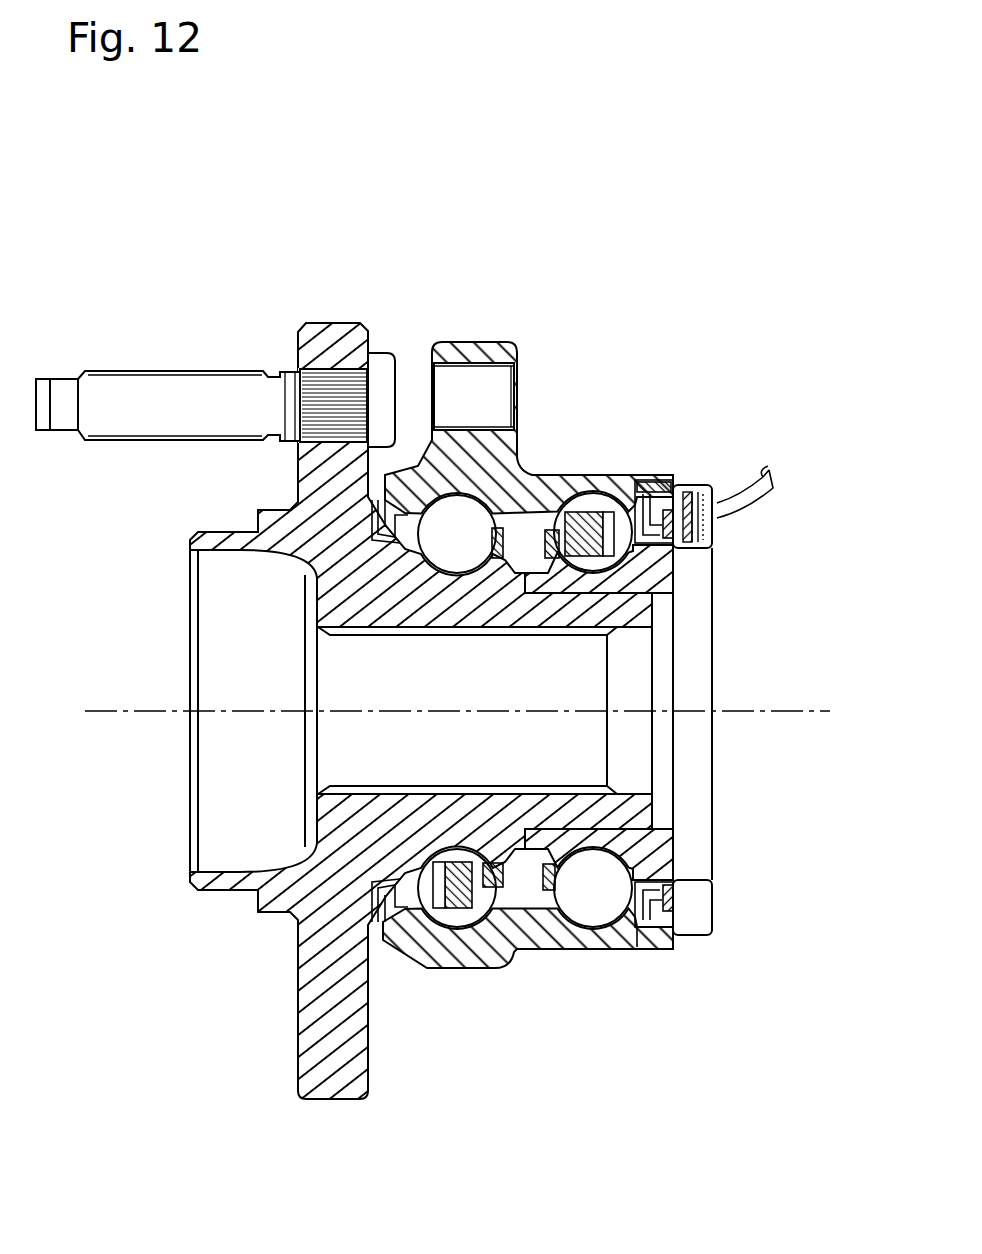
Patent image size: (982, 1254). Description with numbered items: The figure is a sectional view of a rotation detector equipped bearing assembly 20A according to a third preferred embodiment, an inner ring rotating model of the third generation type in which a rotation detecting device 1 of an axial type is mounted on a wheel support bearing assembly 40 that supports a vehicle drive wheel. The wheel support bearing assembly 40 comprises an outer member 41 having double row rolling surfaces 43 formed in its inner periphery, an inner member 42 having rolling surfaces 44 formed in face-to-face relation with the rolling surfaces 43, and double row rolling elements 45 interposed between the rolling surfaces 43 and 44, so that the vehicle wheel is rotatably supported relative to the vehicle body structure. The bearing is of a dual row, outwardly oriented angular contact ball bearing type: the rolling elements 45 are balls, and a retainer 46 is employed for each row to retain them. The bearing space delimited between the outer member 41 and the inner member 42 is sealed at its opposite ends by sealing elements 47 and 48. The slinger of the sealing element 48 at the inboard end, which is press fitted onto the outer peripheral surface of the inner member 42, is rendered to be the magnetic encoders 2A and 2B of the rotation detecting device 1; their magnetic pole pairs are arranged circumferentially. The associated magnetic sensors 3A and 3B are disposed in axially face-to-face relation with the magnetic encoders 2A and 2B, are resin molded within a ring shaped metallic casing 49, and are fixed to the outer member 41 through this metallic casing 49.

The rotation detector equipped bearing assembly 20A is at (245, 287).
The wheel support bearing assembly 40 is at (336, 318).
The outer member 41 is at (560, 468).
The inner member 42 is at (353, 607).
The rolling surfaces 43 is at (433, 475).
The rolling surfaces 44 is at (398, 550).
The rolling elements 45 is at (477, 533).
The retainer 46 is at (567, 523).
The sealing element 47 is at (386, 922).
The sealing element 48 is at (655, 927).
The metallic casing 49 is at (716, 532).
The rotation detecting device 1 is at (847, 340).
The magnetic encoder 2A is at (692, 487).
The magnetic encoder 2B is at (763, 460).
The magnetic sensor 3A is at (684, 497).
The magnetic sensor 3B is at (693, 517).